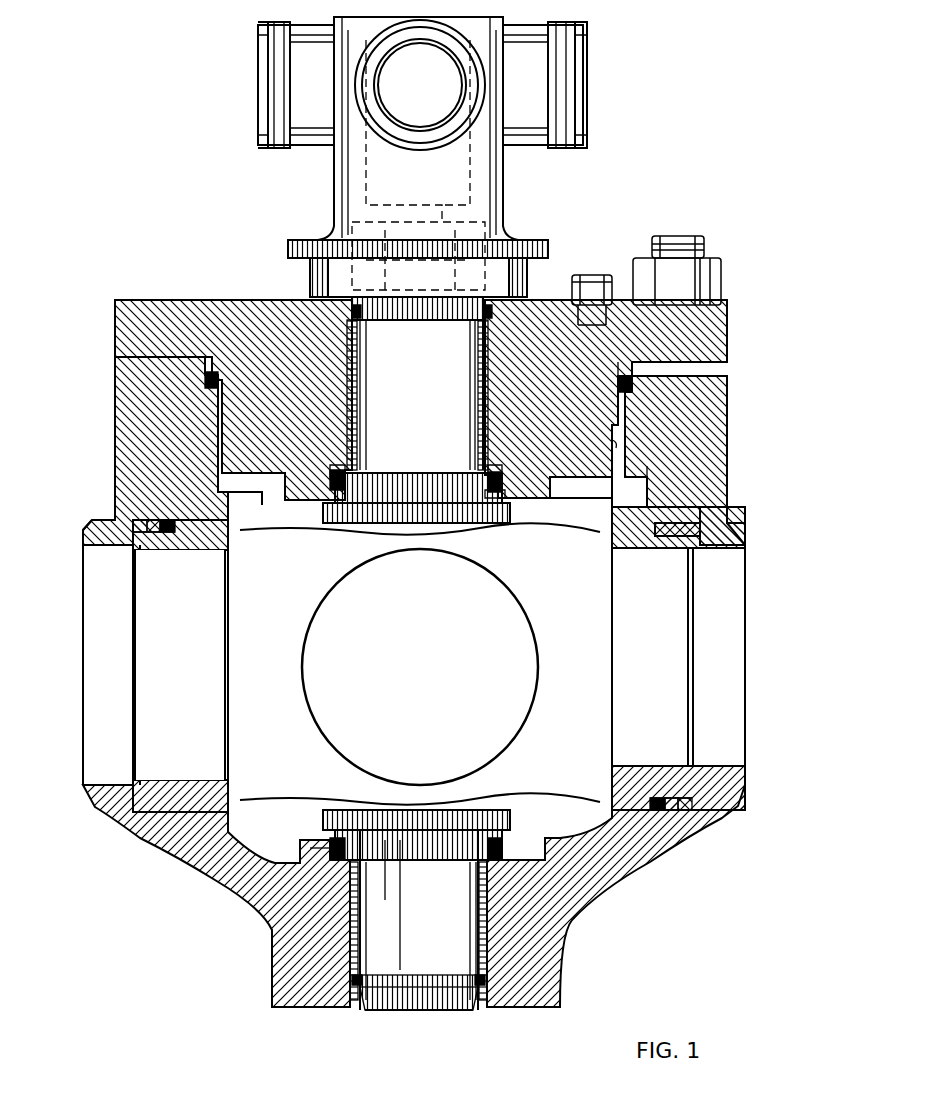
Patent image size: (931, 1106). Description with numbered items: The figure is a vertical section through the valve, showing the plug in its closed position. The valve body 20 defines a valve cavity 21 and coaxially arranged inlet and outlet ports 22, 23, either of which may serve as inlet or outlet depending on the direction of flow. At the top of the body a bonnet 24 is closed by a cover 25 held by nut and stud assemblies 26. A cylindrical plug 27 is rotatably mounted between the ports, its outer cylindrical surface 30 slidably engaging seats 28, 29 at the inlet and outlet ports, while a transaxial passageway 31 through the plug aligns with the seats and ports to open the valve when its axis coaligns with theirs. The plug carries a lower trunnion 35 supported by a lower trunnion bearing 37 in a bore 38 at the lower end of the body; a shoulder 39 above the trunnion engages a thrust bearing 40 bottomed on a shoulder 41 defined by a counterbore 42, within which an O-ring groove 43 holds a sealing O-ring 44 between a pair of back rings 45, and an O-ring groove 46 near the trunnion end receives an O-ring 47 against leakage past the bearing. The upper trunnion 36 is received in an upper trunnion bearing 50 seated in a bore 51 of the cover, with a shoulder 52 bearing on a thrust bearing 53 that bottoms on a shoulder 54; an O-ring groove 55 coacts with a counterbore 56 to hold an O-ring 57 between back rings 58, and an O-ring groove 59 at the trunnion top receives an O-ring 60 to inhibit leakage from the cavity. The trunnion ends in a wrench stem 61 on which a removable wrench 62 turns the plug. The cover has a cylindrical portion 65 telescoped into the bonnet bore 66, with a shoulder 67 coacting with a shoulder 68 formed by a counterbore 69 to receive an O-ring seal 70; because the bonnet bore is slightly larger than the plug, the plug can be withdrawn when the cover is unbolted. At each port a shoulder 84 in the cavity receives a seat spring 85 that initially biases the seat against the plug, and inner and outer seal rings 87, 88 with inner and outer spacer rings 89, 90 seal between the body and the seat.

The valve body 20 is at (730, 527).
The valve cavity 21 is at (655, 448).
The inlet port 22 is at (100, 640).
The outlet port 23 is at (730, 615).
The bonnet 24 is at (706, 385).
The cover 25 is at (545, 306).
The nut and stud assemblies 26 is at (690, 240).
The plug 27 is at (612, 603).
The seat 28 is at (170, 688).
The seat 29 is at (675, 672).
The outer cylindrical surface 30 is at (590, 712).
The passageway 31 is at (505, 612).
The lower trunnion 35 is at (425, 960).
The upper trunnion 36 is at (352, 360).
The lower trunnion bearing 37 is at (480, 982).
The bore 38 is at (478, 945).
The shoulder 39 is at (490, 882).
The thrust bearing 40 is at (492, 872).
The shoulder 41 is at (330, 856).
The counterbore 42 is at (335, 815).
The O-ring groove 43 is at (505, 830).
The sealing O-ring 44 is at (305, 842).
The back rings 45 is at (348, 840).
The O-ring groove 46 is at (385, 975).
The O-ring 47 is at (465, 975).
The upper trunnion bearing 50 is at (347, 405).
The bore 51 is at (360, 432).
The shoulder 52 is at (490, 470).
The thrust bearing 53 is at (500, 480).
The shoulder 54 is at (372, 478).
The O-ring groove 55 is at (492, 523).
The counterbore 56 is at (502, 492).
The O-ring 57 is at (330, 476).
The back rings 58 is at (346, 486).
The O-ring groove 59 is at (410, 320).
The O-ring 60 is at (492, 318).
The wrench stem 61 is at (478, 236).
The wrench 62 is at (560, 75).
The cylindrical portion 65 is at (634, 388).
The bonnet bore 66 is at (618, 445).
The shoulder 67 is at (636, 386).
The shoulder 68 is at (220, 380).
The counterbore 69 is at (212, 372).
The O-ring seal 70 is at (220, 385).
The shoulder 84 is at (650, 500).
The seat spring 85 is at (662, 523).
The inner seal ring 87 is at (655, 812).
The outer seal ring 88 is at (690, 812).
The inner spacer ring 89 is at (670, 812).
The outer spacer ring 90 is at (700, 808).